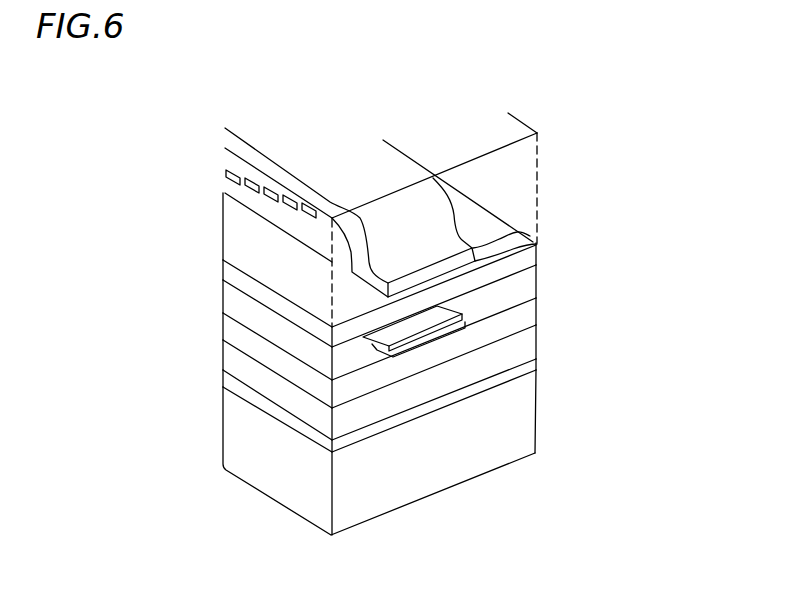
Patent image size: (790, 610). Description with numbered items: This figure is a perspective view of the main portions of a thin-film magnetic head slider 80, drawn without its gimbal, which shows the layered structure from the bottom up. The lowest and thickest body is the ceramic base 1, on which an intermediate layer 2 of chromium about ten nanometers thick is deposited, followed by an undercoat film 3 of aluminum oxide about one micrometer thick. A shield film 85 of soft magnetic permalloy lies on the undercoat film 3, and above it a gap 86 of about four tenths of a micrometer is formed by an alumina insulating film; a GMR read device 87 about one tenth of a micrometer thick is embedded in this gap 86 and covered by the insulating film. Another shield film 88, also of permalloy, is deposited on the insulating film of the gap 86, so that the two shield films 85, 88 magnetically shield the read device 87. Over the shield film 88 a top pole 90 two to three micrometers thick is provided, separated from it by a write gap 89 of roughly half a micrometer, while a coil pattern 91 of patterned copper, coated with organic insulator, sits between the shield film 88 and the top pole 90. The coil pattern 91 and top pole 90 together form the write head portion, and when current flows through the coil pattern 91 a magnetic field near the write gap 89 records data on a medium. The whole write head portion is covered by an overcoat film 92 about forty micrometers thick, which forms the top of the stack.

The thin-film magnetic head slider 80 is at (160, 283).
The overcoat film 92 is at (528, 161).
The coil pattern 91 is at (238, 197).
The top pole 90 is at (520, 221).
The write gap 89 is at (525, 237).
The shield film 88 is at (537, 257).
The gap 86 is at (540, 275).
The GMR read device 87 is at (525, 305).
The shield film 85 is at (533, 313).
The undercoat film 3 is at (525, 347).
The intermediate layer 2 is at (537, 362).
The ceramic base 1 is at (532, 403).